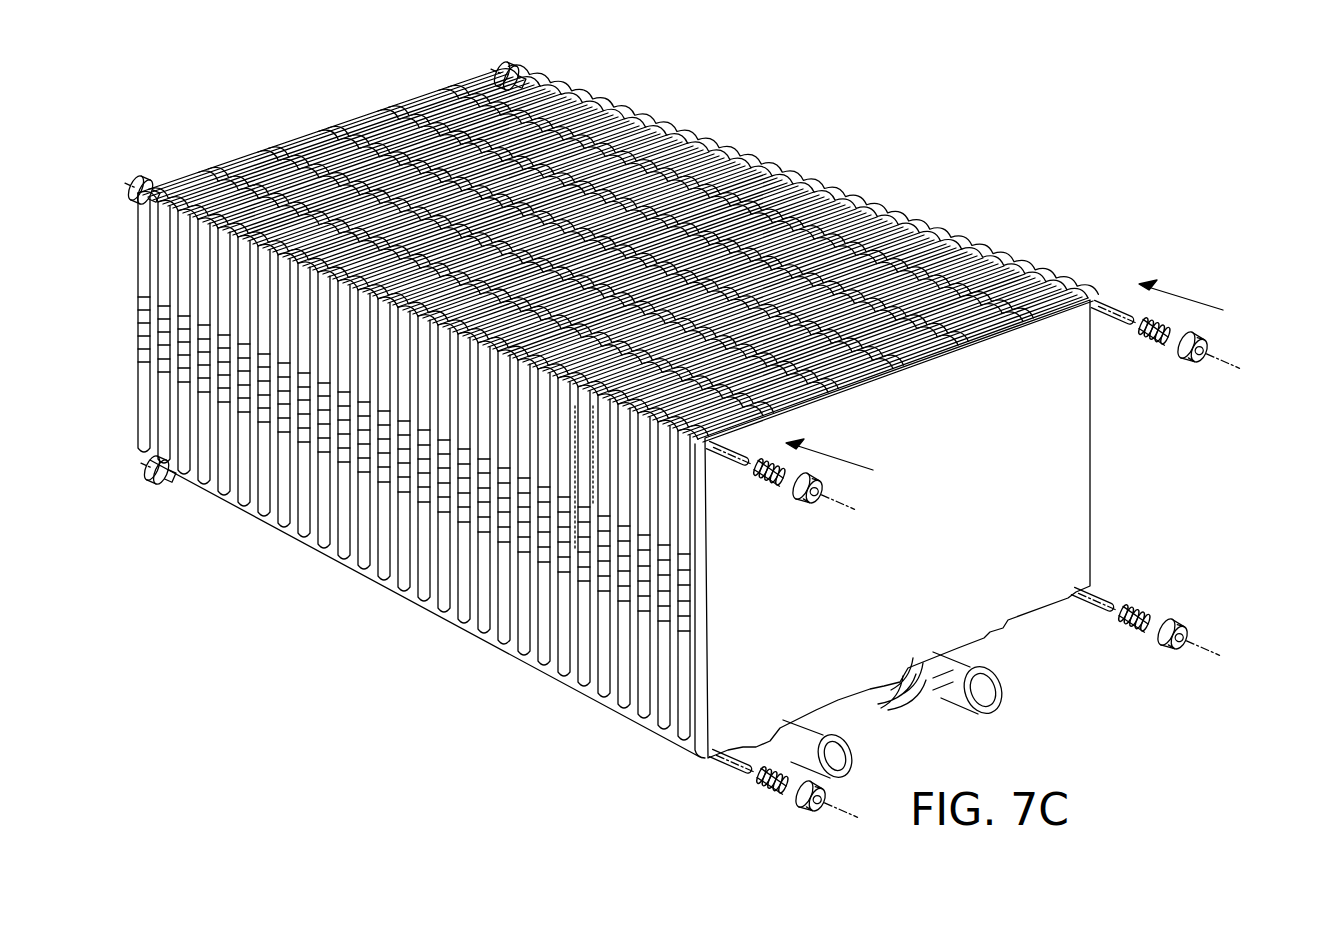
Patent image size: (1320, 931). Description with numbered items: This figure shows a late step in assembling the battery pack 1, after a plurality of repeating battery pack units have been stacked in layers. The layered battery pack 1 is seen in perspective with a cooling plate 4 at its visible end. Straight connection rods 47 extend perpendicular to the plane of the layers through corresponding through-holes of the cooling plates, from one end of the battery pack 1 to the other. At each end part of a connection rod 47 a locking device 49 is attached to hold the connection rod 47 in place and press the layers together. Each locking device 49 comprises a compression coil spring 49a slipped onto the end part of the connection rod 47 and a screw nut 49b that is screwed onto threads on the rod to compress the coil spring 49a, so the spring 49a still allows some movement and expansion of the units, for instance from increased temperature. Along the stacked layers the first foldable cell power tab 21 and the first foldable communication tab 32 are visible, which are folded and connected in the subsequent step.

The battery pack 1 is at (960, 101).
The cooling plate 4 is at (1040, 457).
The first foldable cell power tab 21 is at (570, 572).
The first foldable communication tab 32 is at (595, 614).
The connection rod 47 is at (1108, 290).
The locking device 49 is at (1194, 273).
The compression coil spring 49a is at (1145, 323).
The screw nut 49b is at (1186, 339).